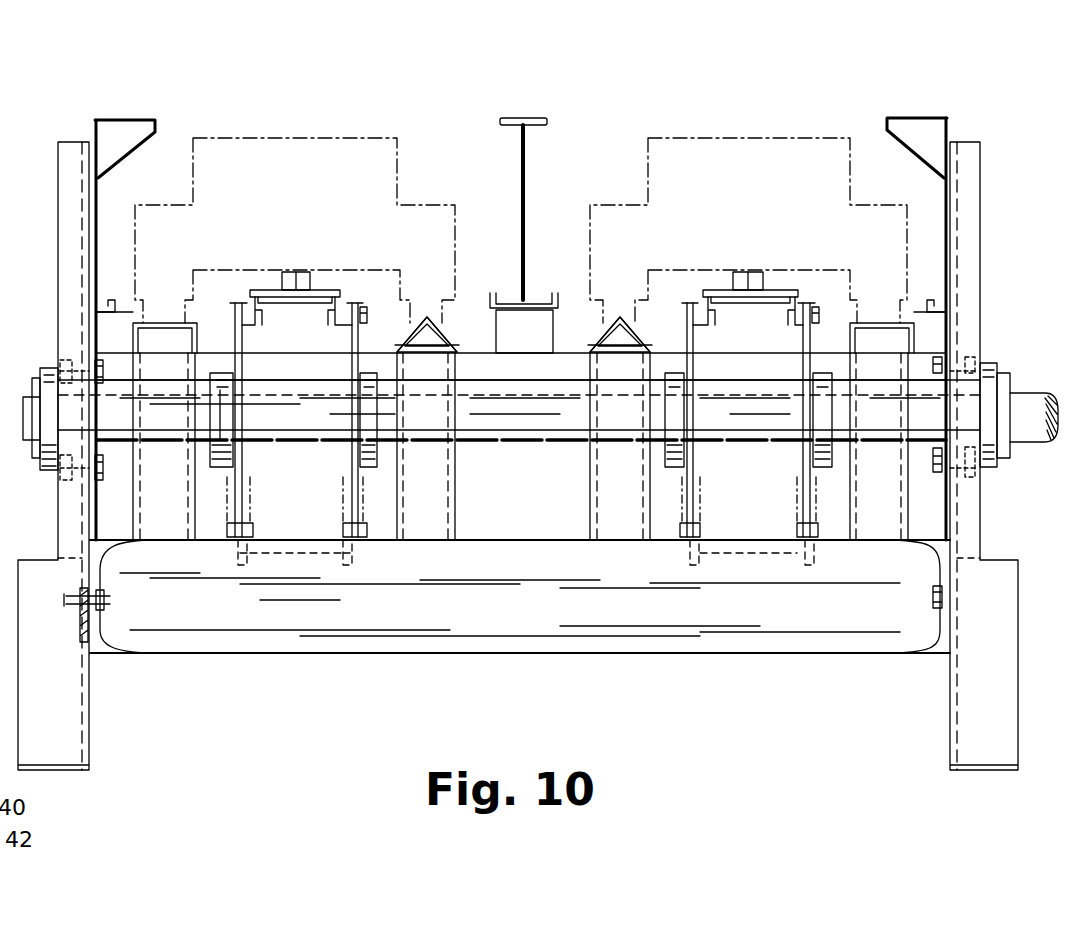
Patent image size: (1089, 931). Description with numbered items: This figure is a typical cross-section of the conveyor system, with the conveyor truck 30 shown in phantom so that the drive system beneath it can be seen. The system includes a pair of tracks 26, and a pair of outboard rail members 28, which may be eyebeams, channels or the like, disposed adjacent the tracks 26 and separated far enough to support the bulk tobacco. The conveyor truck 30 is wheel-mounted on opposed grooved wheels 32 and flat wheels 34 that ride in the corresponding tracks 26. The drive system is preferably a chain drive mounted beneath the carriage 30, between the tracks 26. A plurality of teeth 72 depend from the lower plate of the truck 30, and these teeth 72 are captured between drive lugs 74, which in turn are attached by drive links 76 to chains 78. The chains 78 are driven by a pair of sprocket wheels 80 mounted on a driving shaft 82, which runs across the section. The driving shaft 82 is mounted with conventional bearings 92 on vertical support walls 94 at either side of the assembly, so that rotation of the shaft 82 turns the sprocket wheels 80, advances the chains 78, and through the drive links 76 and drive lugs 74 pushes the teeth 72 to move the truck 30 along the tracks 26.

The tracks 26 is at (194, 328).
The outboard rail members 28 is at (126, 120).
The conveyor truck 30 is at (298, 132).
The grooved wheels 32 is at (445, 319).
The flat wheels 34 is at (140, 312).
The teeth 72 is at (283, 284).
The drive lugs 74 is at (338, 290).
The drive links 76 is at (334, 311).
The chains 78 is at (366, 311).
The sprocket wheels 80 is at (351, 357).
The driving shaft 82 is at (541, 396).
The bearings 92 is at (44, 369).
The vertical support walls 94 is at (60, 226).